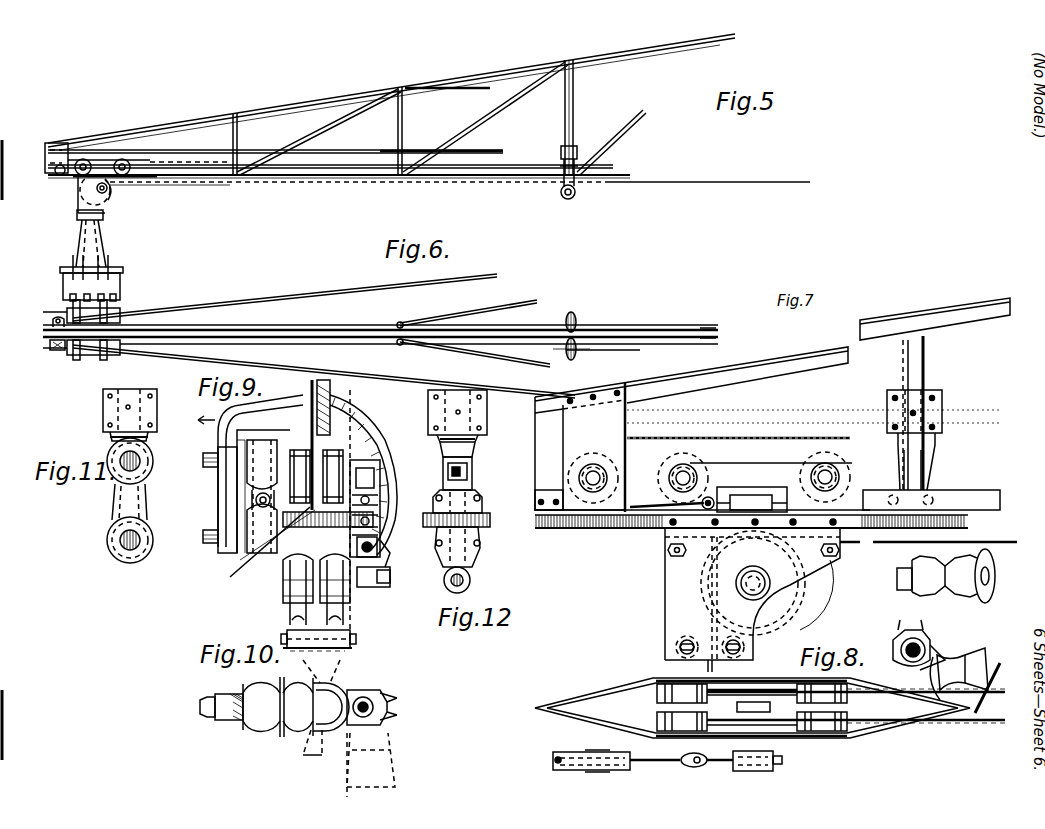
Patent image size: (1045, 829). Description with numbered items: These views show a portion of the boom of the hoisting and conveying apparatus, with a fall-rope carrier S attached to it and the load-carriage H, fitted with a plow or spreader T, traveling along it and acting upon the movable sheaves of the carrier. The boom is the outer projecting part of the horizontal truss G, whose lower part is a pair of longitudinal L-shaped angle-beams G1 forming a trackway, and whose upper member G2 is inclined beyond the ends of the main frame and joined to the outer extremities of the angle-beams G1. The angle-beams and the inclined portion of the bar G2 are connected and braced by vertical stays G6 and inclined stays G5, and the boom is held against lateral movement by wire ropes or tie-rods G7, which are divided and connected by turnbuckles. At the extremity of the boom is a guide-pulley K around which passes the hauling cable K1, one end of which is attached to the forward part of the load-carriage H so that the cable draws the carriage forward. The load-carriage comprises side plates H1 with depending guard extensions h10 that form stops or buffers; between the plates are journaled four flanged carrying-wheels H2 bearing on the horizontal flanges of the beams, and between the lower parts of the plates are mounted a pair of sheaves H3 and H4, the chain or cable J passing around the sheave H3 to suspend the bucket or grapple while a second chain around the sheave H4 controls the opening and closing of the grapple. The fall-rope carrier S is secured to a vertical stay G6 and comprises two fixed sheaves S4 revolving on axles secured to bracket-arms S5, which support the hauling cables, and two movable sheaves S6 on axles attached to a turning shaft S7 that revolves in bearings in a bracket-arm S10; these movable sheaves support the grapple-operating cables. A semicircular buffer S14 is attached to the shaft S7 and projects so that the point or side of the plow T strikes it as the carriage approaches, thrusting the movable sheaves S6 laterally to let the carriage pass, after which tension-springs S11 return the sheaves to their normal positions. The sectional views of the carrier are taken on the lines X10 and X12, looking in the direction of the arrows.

In FIG. 5, the horizontal truss G is at (330, 159).
In FIG. 6, the horizontal truss G is at (305, 328).
In FIG. 5, the angle beams G1 is at (355, 179).
In FIG. 7, the angle beams G1 is at (985, 496).
In FIG. 9, the angle beams G1 is at (390, 565).
In FIG. 5, the upper member of truss G2 is at (612, 52).
In FIG. 6, the upper member of truss G2 is at (295, 300).
In FIG. 7, the upper member of truss G2 is at (746, 366).
In FIG. 5, the inclined stays G5 is at (325, 126).
In FIG. 5, the vertical stays G6 is at (237, 132).
In FIG. 7, the vertical stays G6 is at (925, 368).
In FIG. 9, the vertical stays G6 is at (330, 387).
In FIG. 5, the tie-rods G7 is at (448, 86).
In FIG. 5, the guide-pulley K is at (57, 178).
In FIG. 7, the guide-pulley K is at (592, 530).
In FIG. 8, the guide-pulley K is at (553, 770).
In FIG. 5, the hauling cable K1 is at (180, 165).
In FIG. 7, the hauling cable K1 is at (765, 439).
In FIG. 8, the hauling cable K1 is at (648, 766).
In FIG. 5, the load carriage H is at (125, 180).
In FIG. 7, the load carriage H is at (767, 527).
In FIG. 9, the load carriage H is at (382, 486).
In FIG. 5, the side plates H1 is at (78, 190).
In FIG. 7, the side plates H1 is at (752, 488).
In FIG. 5, the flanged carrying-wheels H2 is at (82, 158).
In FIG. 7, the flanged carrying-wheels H2 is at (697, 466).
In FIG. 8, the flanged carrying-wheels H2 is at (657, 694).
In FIG. 9, the flanged carrying-wheels H2 is at (316, 530).
In FIG. 5, the sheave H3 is at (108, 196).
In FIG. 7, the sheave H3 is at (800, 595).
In FIG. 8, the sheave H3 is at (788, 740).
In FIG. 8, the sheave H4 is at (781, 684).
In FIG. 9, the sheave H4 is at (310, 638).
In FIG. 5, the guard extensions h10 is at (104, 214).
In FIG. 7, the guard extensions h10 is at (670, 646).
In FIG. 5, the chain or cable J is at (78, 210).
In FIG. 7, the chain or cable J is at (710, 610).
In FIG. 5, the plow or spreader T is at (152, 183).
In FIG. 6, the plow or spreader T is at (125, 326).
In FIG. 7, the plow or spreader T is at (542, 530).
In FIG. 8, the plow or spreader T is at (645, 683).
In FIG. 9, the plow or spreader T is at (321, 669).
In FIG. 10, the plow or spreader T is at (261, 725).
In FIG. 5, the fall-rope carrier S is at (560, 190).
In FIG. 6, the fall-rope carrier S is at (596, 336).
In FIG. 7, the fall-rope carrier S is at (944, 430).
In FIG. 9, the fall-rope carrier S is at (322, 491).
In FIG. 11, the fall-rope carrier S is at (113, 505).
In FIG. 12, the fall-rope carrier S is at (457, 491).
In FIG. 9, the fixed sheaves S4 is at (257, 468).
In FIG. 11, the fixed sheaves S4 is at (152, 468).
In FIG. 9, the bracket-arms S5 is at (218, 515).
In FIG. 5, the movable sheaves S6 is at (576, 193).
In FIG. 7, the movable sheaves S6 is at (996, 577).
In FIG. 8, the movable sheaves S6 is at (994, 680).
In FIG. 9, the movable sheaves S6 is at (290, 598).
In FIG. 8, the turning shaft S7 is at (895, 648).
In FIG. 9, the turning shaft S7 is at (380, 545).
In FIG. 10, the turning shaft S7 is at (390, 710).
In FIG. 12, the turning shaft S7 is at (466, 472).
In FIG. 9, the bracket-arm S10 is at (374, 448).
In FIG. 9, the tension-springs S11 is at (380, 500).
In FIG. 8, the semicircular buffer S14 is at (965, 655).
In FIG. 9, the semicircular buffer S14 is at (292, 568).
In FIG. 10, the semicircular buffer S14 is at (348, 684).
In FIG. 12, the semicircular buffer S14 is at (490, 521).
In FIG. 9, the section line X10 is at (265, 594).
In FIG. 9, the section line X12 is at (366, 514).